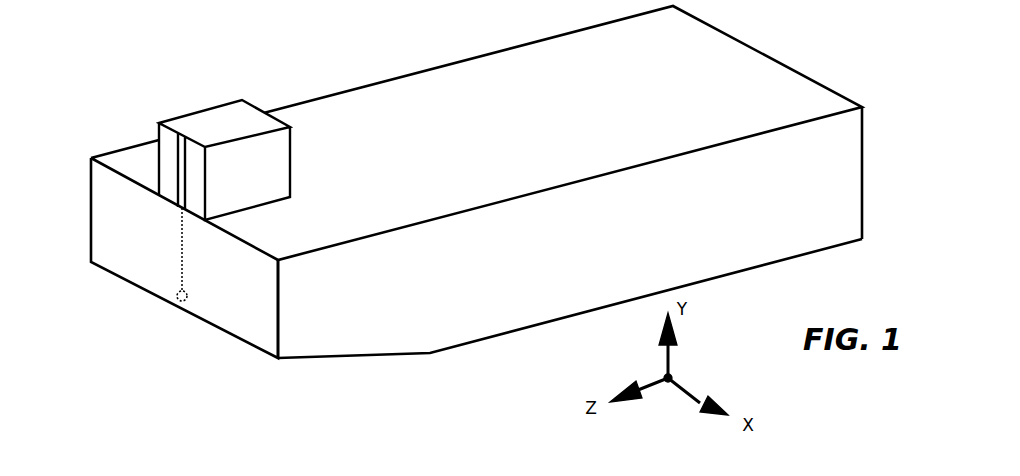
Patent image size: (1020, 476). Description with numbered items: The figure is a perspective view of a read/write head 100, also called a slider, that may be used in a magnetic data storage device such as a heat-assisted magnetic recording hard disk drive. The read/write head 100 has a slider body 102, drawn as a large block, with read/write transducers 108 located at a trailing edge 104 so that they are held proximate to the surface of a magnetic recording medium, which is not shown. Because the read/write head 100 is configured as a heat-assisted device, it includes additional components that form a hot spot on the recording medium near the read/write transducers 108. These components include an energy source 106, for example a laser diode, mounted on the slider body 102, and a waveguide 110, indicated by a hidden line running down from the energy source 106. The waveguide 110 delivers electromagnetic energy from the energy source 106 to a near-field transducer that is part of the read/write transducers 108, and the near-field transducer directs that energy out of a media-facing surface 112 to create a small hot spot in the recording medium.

The read/write head 100 is at (822, 50).
The slider body 102 is at (418, 85).
The trailing edge 104 is at (91, 238).
The energy source 106 is at (183, 120).
The read/write transducers 108 is at (178, 335).
The waveguide 110 is at (182, 253).
The media-facing surface 112 is at (265, 358).